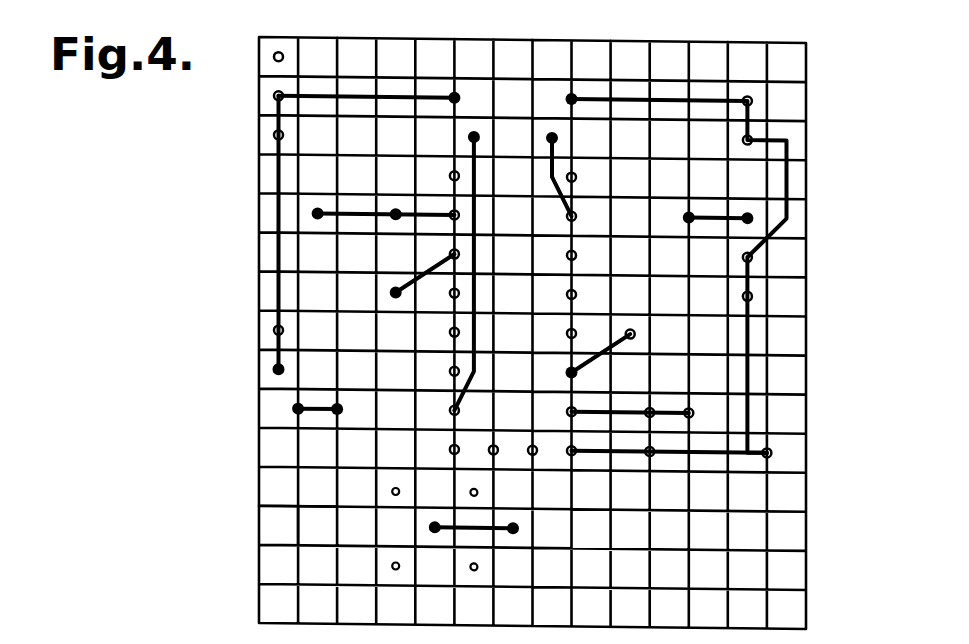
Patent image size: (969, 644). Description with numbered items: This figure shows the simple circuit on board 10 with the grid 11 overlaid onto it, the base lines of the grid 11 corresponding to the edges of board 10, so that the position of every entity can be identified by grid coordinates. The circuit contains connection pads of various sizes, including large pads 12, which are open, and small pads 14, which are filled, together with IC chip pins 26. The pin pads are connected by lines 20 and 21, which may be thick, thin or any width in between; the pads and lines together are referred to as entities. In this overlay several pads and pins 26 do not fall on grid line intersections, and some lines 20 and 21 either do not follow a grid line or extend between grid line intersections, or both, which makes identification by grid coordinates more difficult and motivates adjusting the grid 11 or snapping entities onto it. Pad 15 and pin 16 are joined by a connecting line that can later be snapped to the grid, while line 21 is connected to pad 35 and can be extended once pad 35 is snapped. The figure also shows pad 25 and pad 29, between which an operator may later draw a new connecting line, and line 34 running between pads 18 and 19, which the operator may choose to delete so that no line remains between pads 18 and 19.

The board 10 is at (276, 565).
The grid 11 is at (290, 534).
The large pads 12 is at (273, 132).
The small pads 14 is at (478, 126).
The pad 15 is at (390, 291).
The pin 16 is at (450, 252).
The pad 18 is at (298, 414).
The pad 19 is at (337, 414).
The lines 20 is at (476, 292).
The line 21 is at (597, 354).
The pad 25 is at (493, 443).
The IC chip pins 26 is at (451, 365).
The pad 29 is at (532, 452).
The line 34 is at (316, 405).
The pad 35 is at (635, 330).